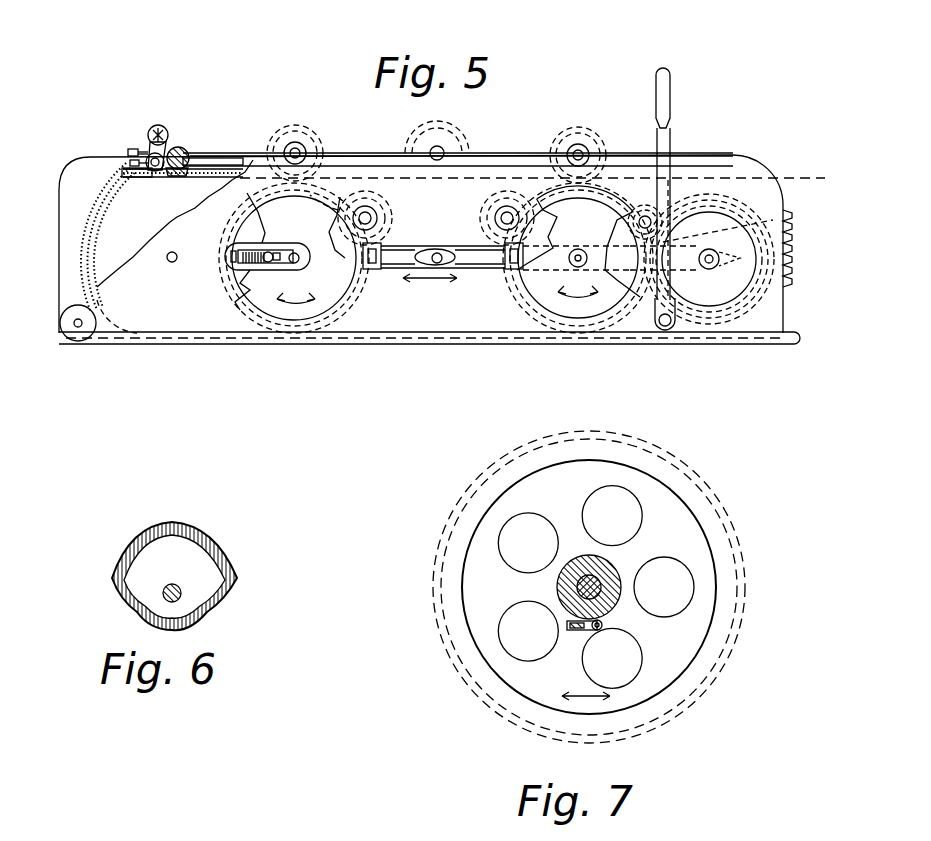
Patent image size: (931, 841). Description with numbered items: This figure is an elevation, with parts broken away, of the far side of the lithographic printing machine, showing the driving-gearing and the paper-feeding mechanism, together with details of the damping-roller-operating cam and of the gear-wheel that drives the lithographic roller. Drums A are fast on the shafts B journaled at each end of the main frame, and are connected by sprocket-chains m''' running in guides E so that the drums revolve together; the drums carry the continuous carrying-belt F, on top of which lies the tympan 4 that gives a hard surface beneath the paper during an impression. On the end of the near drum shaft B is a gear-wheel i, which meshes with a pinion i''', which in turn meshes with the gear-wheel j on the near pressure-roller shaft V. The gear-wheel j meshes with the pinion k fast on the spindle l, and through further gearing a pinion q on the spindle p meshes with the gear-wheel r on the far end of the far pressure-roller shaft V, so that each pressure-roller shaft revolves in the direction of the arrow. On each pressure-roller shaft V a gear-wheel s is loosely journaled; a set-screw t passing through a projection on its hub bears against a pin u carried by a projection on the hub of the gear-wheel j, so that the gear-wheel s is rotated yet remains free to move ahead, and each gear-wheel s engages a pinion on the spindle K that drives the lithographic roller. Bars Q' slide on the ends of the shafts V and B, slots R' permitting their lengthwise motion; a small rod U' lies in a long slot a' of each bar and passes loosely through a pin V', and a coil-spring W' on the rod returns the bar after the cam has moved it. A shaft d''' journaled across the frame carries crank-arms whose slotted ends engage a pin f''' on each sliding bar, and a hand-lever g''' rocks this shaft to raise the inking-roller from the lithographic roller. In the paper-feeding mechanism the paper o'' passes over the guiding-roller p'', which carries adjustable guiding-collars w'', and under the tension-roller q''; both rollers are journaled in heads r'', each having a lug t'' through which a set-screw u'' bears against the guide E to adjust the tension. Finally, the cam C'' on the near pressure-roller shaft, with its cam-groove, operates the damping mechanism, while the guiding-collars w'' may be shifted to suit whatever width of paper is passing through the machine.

In FIG. 5, the drum A is at (748, 187).
In FIG. 5, the shaft B is at (169, 262).
In FIG. 5, the guide E is at (123, 172).
In FIG. 5, the carrying-belt F is at (232, 177).
In FIG. 5, the tympan 4 is at (213, 163).
In FIG. 5, the spindle K is at (583, 148).
In FIG. 5, the pressure-roller shaft V is at (427, 248).
In FIG. 6, the pressure-roller shaft V is at (124, 603).
In FIG. 5, the pin V' is at (349, 321).
In FIG. 5, the band V''' is at (159, 237).
In FIG. 5, the coil-spring W' is at (236, 317).
In FIG. 5, the small rod U' is at (294, 258).
In FIG. 5, the long slot a' is at (266, 312).
In FIG. 5, the slot R' is at (531, 312).
In FIG. 5, the bar Q' is at (397, 293).
In FIG. 5, the gear-wheel s is at (523, 287).
In FIG. 7, the gear-wheel s is at (560, 606).
In FIG. 5, the spindle p is at (389, 211).
In FIG. 5, the pinion q is at (386, 218).
In FIG. 5, the spindle l is at (501, 216).
In FIG. 5, the gear-wheel r is at (351, 168).
In FIG. 5, the pinion k is at (520, 213).
In FIG. 5, the gear-wheel j is at (578, 258).
In FIG. 7, the gear-wheel j is at (483, 655).
In FIG. 5, the gear-wheel i is at (709, 252).
In FIG. 5, the sprocket-chain m''' is at (498, 147).
In FIG. 5, the hand-lever g''' is at (700, 184).
In FIG. 5, the pinion i''' is at (686, 135).
In FIG. 5, the pin f''' is at (790, 209).
In FIG. 5, the shaft d''' is at (652, 342).
In FIG. 5, the guiding-collar w'' is at (180, 91).
In FIG. 5, the lever S'' is at (147, 119).
In FIG. 5, the guiding-roller p'' is at (184, 125).
In FIG. 5, the head r'' is at (222, 111).
In FIG. 5, the tension-roller q'' is at (210, 142).
In FIG. 5, the set-screw u'' is at (129, 132).
In FIG. 5, the paper o'' is at (122, 128).
In FIG. 5, the lug t'' is at (106, 134).
In FIG. 6, the cam C'' is at (211, 576).
In FIG. 7, the pin u is at (624, 633).
In FIG. 7, the set-screw t is at (577, 652).